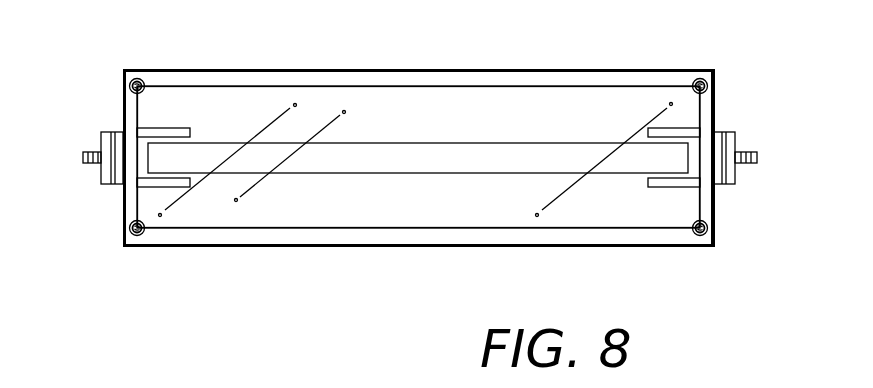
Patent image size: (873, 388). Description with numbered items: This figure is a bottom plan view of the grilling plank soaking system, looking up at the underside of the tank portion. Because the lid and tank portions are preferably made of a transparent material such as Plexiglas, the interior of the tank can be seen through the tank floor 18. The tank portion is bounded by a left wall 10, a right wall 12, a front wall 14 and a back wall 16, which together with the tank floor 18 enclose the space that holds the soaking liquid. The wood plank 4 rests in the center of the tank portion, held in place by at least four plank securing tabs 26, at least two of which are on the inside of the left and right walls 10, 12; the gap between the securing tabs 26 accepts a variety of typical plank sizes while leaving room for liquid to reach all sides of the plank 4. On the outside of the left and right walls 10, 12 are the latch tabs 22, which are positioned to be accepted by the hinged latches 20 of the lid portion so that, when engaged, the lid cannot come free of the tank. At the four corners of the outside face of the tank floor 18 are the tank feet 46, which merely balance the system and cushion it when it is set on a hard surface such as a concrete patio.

The wood plank 4 is at (556, 155).
The left wall 10 is at (123, 198).
The right wall 12 is at (716, 200).
The front wall 14 is at (412, 246).
The back wall 16 is at (393, 69).
The tank floor 18 is at (431, 124).
The hinged latch 20 is at (100, 131).
The latch tab 22 is at (82, 152).
The plank securing tab 26 is at (648, 182).
The tank foot 46 is at (137, 79).